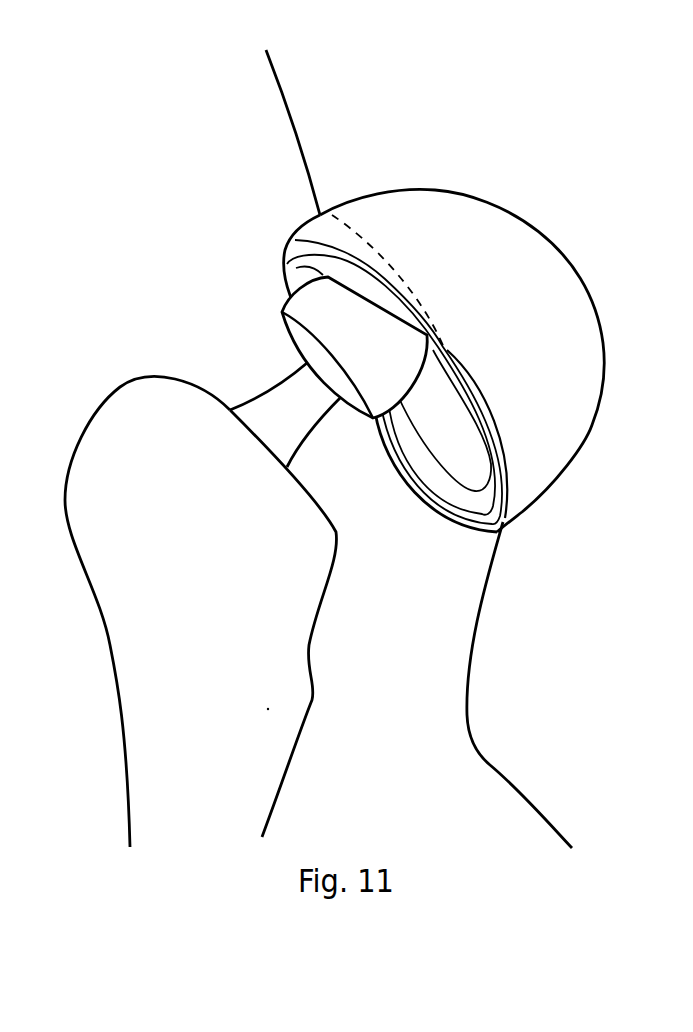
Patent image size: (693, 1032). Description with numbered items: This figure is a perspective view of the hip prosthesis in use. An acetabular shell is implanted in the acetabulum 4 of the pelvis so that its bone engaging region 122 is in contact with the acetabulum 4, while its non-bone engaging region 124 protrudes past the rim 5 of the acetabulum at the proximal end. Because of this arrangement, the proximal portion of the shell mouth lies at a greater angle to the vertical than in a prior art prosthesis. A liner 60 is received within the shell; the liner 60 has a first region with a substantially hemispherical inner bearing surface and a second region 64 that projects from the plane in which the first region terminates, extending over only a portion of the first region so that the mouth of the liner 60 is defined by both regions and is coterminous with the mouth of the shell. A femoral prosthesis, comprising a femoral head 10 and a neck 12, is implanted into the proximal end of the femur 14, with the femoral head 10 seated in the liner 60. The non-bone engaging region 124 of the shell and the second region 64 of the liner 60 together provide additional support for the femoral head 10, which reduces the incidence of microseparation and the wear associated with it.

The acetabulum 4 is at (619, 191).
The rim of the acetabulum 5 is at (326, 204).
The femoral head 10 is at (302, 310).
The neck 12 is at (280, 433).
The femur 14 is at (152, 737).
The liner 60 is at (450, 467).
The second region 64 is at (312, 270).
The bone engaging region 122 is at (579, 333).
The non-bone engaging region 124 is at (320, 230).